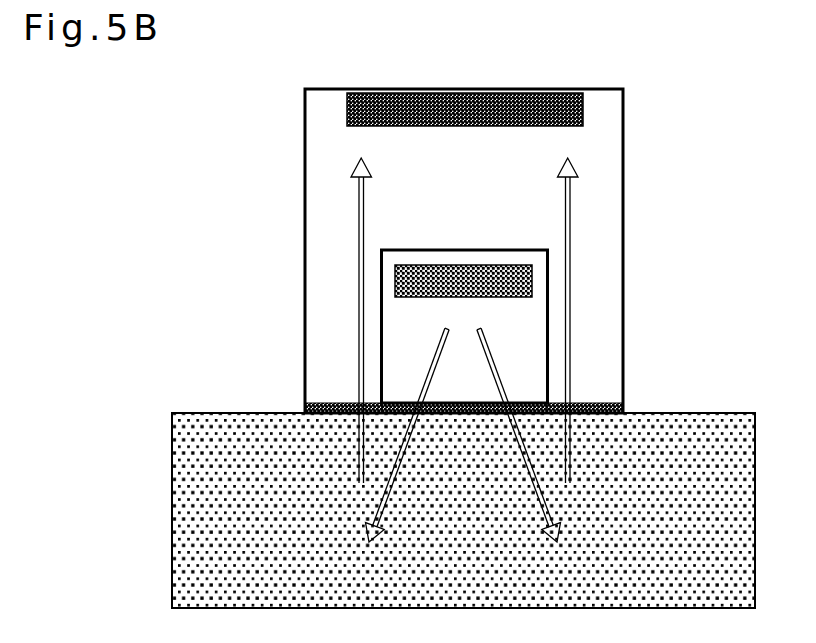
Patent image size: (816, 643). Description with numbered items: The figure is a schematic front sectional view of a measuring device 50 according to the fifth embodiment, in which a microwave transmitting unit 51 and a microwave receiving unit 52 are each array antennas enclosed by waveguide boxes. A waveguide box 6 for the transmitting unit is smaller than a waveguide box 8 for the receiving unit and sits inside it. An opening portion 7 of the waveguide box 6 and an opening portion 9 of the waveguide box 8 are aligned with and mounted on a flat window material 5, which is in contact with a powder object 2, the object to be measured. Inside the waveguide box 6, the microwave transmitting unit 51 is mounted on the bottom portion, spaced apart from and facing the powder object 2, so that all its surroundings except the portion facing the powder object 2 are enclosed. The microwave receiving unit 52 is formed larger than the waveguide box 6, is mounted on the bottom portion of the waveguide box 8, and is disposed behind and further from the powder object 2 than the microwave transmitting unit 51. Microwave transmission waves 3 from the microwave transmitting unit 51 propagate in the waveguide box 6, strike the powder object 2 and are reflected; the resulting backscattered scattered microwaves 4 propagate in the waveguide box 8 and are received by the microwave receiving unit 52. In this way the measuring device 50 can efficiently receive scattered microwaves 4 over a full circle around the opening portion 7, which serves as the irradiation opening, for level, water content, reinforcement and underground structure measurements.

The powder object 2 is at (697, 413).
The microwave transmission waves 3 is at (434, 363).
The scattered microwaves 4 is at (358, 272).
The window material 5 is at (331, 415).
The waveguide box for the transmitting unit 6 is at (432, 250).
The opening portion 7 is at (460, 403).
The waveguide box for the receiving unit 8 is at (625, 148).
The opening portion 9 is at (587, 403).
The measuring device 50 is at (228, 138).
The microwave transmitting unit 51 is at (490, 265).
The microwave receiving unit 52 is at (507, 100).